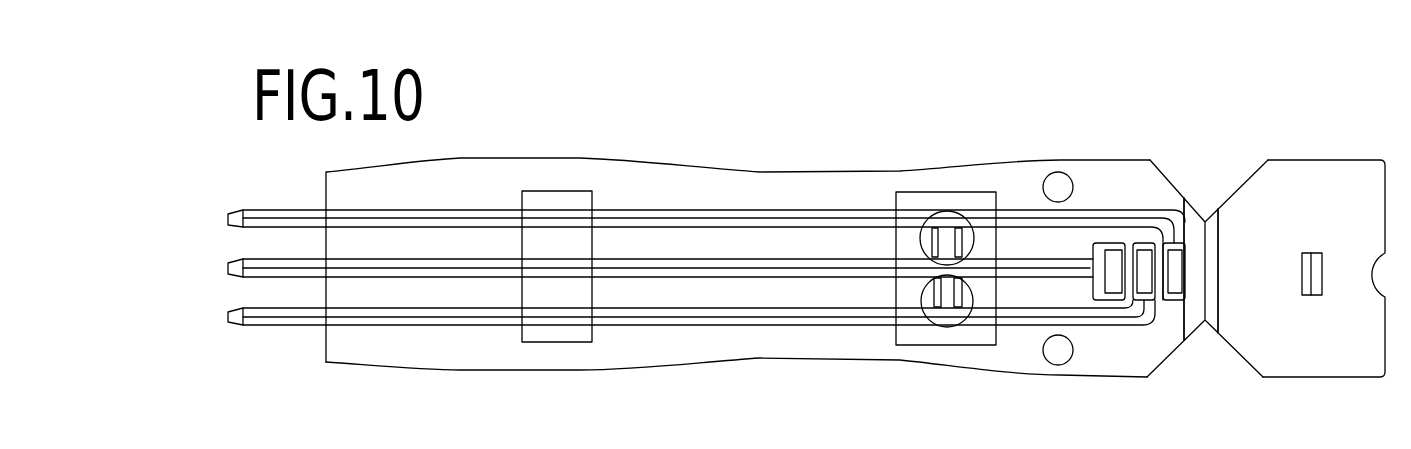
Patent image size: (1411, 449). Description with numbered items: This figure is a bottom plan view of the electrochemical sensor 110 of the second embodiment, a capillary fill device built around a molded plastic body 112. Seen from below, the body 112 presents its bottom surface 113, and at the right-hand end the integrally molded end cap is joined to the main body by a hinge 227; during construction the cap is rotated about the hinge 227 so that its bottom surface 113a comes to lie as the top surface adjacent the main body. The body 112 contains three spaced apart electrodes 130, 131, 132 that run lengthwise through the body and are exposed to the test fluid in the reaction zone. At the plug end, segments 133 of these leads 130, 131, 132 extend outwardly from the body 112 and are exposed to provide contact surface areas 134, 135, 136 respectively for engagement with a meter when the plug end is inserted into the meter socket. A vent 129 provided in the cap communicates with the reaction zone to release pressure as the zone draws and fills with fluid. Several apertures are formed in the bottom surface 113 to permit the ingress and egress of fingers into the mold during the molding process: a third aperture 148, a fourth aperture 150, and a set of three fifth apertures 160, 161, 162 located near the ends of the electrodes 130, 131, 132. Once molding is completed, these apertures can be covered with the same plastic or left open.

The sensor 110 is at (1190, 128).
The molded plastic body 112 is at (398, 346).
The bottom surface 113 is at (663, 345).
The bottom surface of the cap 113a is at (1318, 362).
The vent 129 is at (1313, 233).
The electrode 130 is at (738, 323).
The electrode 131 is at (748, 277).
The electrode 132 is at (760, 229).
The segments of the leads 133 is at (289, 198).
The contact surface area 134 is at (278, 322).
The contact surface area 135 is at (286, 268).
The contact surface area 136 is at (286, 220).
The third aperture 148 is at (537, 340).
The fourth aperture 150 is at (904, 333).
The fifth aperture 160 is at (1118, 244).
The fifth aperture 161 is at (1145, 244).
The fifth aperture 162 is at (1178, 245).
The hinge 227 is at (1204, 337).